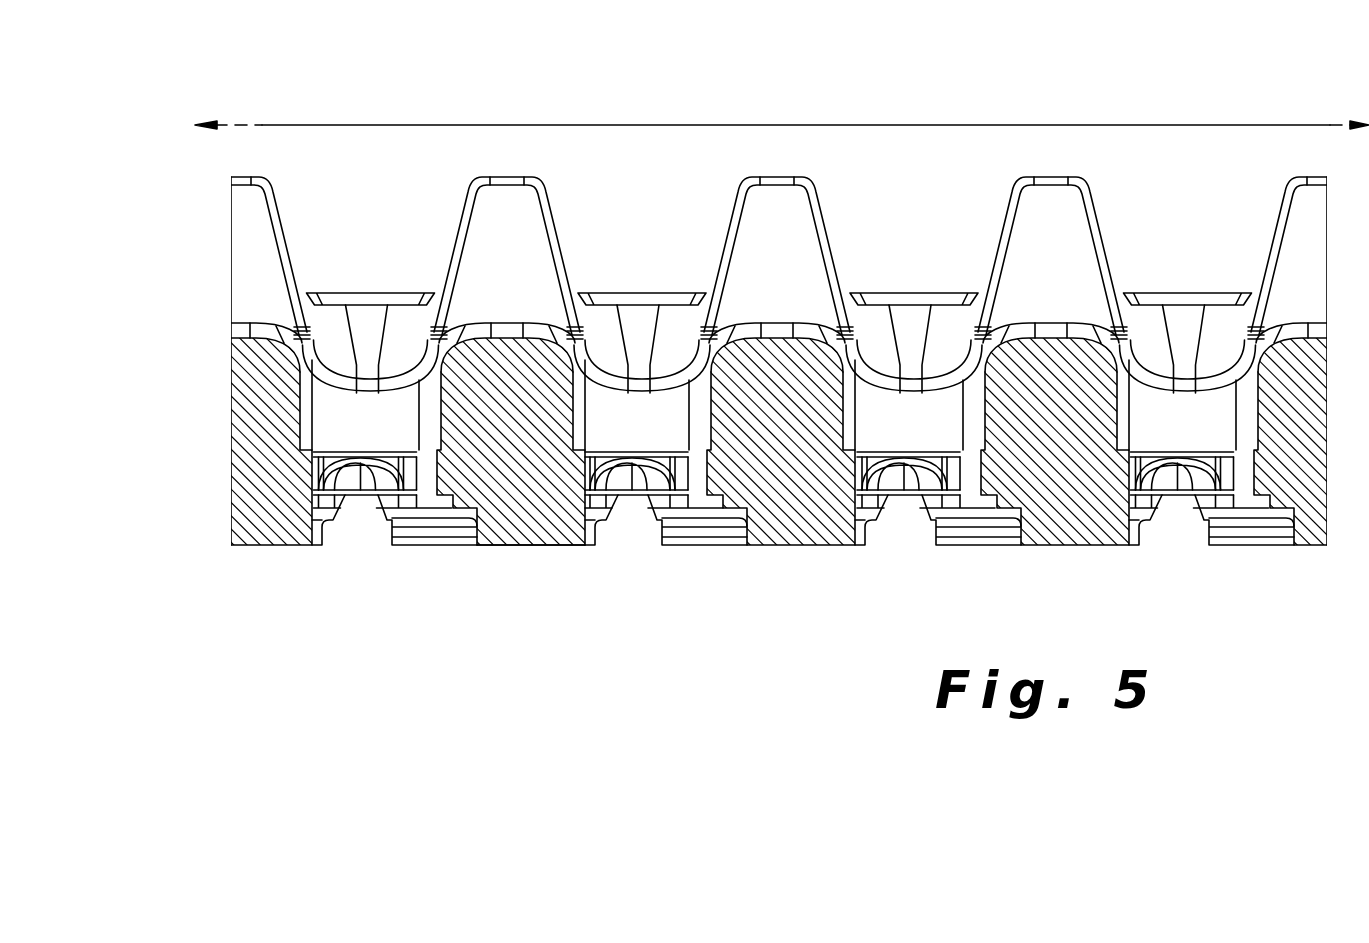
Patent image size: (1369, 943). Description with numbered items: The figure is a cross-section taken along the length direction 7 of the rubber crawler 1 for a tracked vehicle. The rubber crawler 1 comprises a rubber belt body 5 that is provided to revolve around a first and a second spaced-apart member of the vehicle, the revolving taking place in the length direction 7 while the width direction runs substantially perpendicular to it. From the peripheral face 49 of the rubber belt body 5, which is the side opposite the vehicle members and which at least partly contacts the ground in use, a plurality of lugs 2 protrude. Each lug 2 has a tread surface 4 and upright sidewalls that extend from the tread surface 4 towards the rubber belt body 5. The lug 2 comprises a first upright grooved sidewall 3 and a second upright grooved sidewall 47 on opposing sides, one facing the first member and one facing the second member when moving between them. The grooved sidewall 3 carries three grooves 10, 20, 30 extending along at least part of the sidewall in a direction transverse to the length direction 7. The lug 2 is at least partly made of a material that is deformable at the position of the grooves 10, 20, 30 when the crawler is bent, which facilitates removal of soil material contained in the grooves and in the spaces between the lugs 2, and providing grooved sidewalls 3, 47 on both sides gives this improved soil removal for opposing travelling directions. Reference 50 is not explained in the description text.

The rubber crawler 1 is at (684, 392).
The lug 2 is at (536, 514).
The upright sidewall 3 is at (365, 545).
The tread surface 4 is at (527, 545).
The rubber belt body 5 is at (512, 401).
The length direction 7 is at (650, 125).
The groove 10 is at (462, 523).
The groove 20 is at (452, 497).
The groove 30 is at (430, 477).
The second upright grooved sidewall 47 is at (630, 540).
The peripheral face 49 is at (1233, 553).
The recess top 50 is at (630, 507).